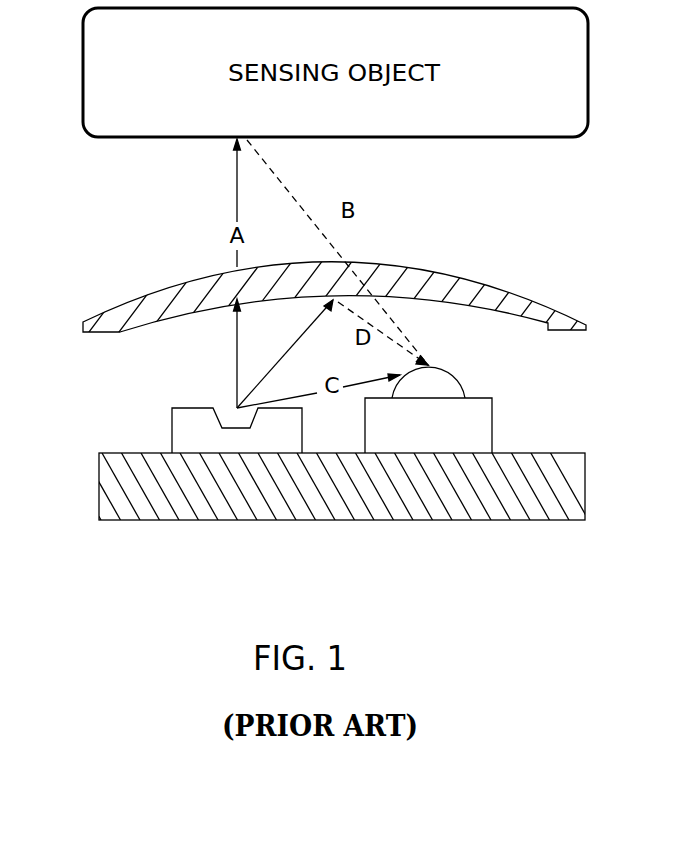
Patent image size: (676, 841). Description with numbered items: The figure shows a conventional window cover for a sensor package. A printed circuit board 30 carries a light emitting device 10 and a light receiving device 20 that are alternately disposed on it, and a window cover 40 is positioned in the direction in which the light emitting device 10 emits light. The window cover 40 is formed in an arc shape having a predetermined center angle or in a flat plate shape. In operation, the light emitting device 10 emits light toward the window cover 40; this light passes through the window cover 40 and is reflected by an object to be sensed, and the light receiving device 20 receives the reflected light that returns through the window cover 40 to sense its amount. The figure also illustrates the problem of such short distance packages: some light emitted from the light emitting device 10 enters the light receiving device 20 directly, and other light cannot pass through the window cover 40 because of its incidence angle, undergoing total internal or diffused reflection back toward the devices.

The light emitting device 10 is at (172, 425).
The light receiving device 20 is at (492, 425).
The printed circuit board 30 is at (334, 520).
The window cover 40 is at (110, 314).